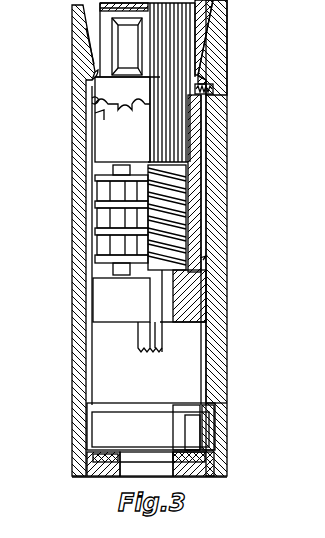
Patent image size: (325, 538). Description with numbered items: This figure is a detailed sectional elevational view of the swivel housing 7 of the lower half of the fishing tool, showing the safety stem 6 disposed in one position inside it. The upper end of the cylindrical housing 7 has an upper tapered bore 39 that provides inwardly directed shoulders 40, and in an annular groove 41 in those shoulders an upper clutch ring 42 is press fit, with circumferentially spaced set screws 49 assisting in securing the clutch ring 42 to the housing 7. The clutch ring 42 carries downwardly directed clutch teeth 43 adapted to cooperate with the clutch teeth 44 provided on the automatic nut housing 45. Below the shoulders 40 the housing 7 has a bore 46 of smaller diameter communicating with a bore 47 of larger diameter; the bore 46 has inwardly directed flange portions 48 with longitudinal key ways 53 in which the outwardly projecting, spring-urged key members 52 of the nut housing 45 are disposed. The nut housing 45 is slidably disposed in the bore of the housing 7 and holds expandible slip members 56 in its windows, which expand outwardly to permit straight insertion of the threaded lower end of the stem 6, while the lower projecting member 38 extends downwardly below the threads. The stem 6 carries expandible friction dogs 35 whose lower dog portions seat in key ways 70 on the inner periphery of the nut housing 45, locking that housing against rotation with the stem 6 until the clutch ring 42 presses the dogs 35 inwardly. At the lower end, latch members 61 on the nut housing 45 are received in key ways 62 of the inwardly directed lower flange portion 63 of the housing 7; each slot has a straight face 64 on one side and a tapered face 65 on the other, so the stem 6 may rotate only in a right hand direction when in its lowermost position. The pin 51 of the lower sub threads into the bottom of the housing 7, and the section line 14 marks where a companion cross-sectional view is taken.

The safety stem 6 is at (188, 52).
The swivel housing 7 is at (218, 221).
The section line 14 is at (18, 150).
The friction dogs 35 is at (118, 38).
The lower projecting member 38 is at (163, 337).
The upper tapered bore 39 is at (210, 24).
The shoulders 40 is at (88, 68).
The annular groove 41 is at (90, 87).
The upper clutch ring 42 is at (142, 112).
The clutch teeth 43 is at (93, 102).
The clutch teeth 44 is at (97, 117).
The automatic nut housing 45 is at (193, 127).
The bore 46 is at (204, 258).
The bore 47 is at (214, 329).
The flange portions 48 is at (90, 223).
The set screws 49 is at (214, 83).
The pin 51 is at (85, 473).
The dogs or key members 52 is at (90, 142).
The longitudinal slots or key ways 53 is at (94, 197).
The slip members 56 is at (194, 190).
The latch members 61 is at (92, 296).
The longitudinal slots or key ways 62 is at (177, 435).
The lower flange portion 63 is at (208, 442).
The straight face 64 is at (173, 407).
The tapered face 65 is at (213, 407).
The key ways 70 is at (214, 99).